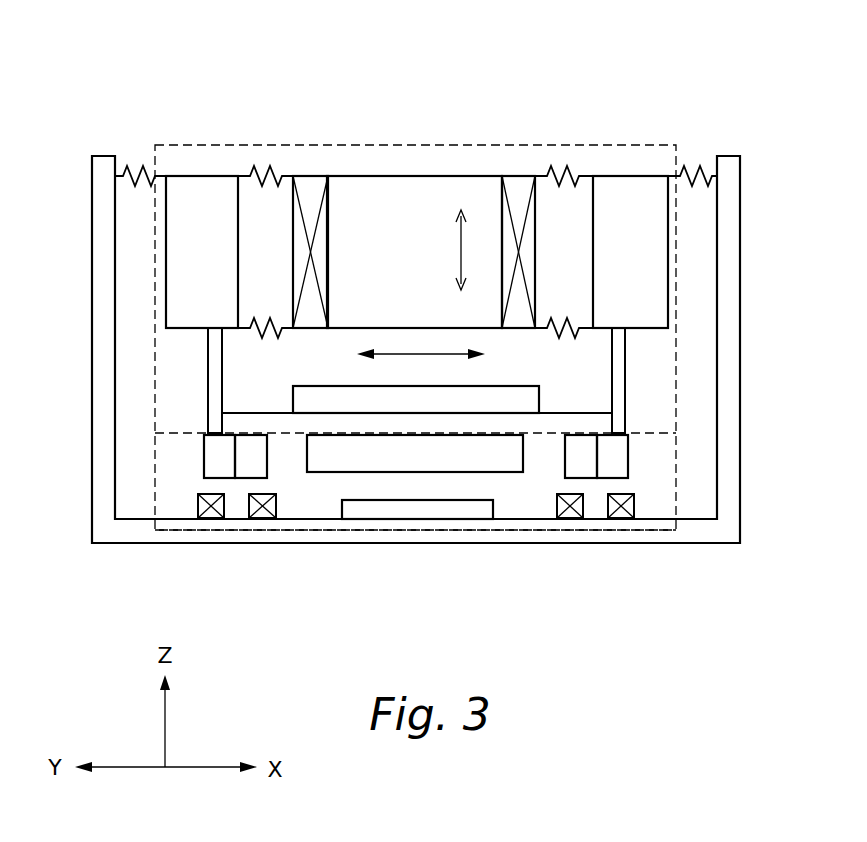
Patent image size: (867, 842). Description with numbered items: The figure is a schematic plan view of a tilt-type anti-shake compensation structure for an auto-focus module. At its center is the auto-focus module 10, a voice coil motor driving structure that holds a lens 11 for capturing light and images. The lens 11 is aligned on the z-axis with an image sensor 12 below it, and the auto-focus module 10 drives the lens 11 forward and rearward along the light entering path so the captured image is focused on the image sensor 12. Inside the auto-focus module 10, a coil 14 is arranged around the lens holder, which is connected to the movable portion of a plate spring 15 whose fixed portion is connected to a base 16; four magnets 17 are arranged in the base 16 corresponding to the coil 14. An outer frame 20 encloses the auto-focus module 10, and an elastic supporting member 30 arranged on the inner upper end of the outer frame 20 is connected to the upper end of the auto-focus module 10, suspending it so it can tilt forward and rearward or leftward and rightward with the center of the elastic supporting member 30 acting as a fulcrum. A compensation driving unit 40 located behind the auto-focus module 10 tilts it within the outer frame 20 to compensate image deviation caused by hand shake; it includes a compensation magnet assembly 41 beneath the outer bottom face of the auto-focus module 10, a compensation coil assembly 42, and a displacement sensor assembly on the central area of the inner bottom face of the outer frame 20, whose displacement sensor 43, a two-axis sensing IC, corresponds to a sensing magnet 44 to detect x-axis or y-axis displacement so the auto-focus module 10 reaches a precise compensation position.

The auto-focus module 10 is at (205, 145).
The lens 11 is at (413, 195).
The image sensor 12 is at (325, 395).
The coil 14 is at (318, 180).
The plate spring 15 is at (262, 175).
The base 16 is at (215, 400).
The magnet 17 is at (177, 285).
The outer frame 20 is at (707, 533).
The elastic supporting member 30 is at (125, 170).
The compensation driving unit 40 is at (418, 543).
The compensation magnet assembly 41 is at (208, 455).
The compensation coil assembly 42 is at (210, 517).
The displacement sensor 43 is at (381, 517).
The sensing magnet 44 is at (475, 460).